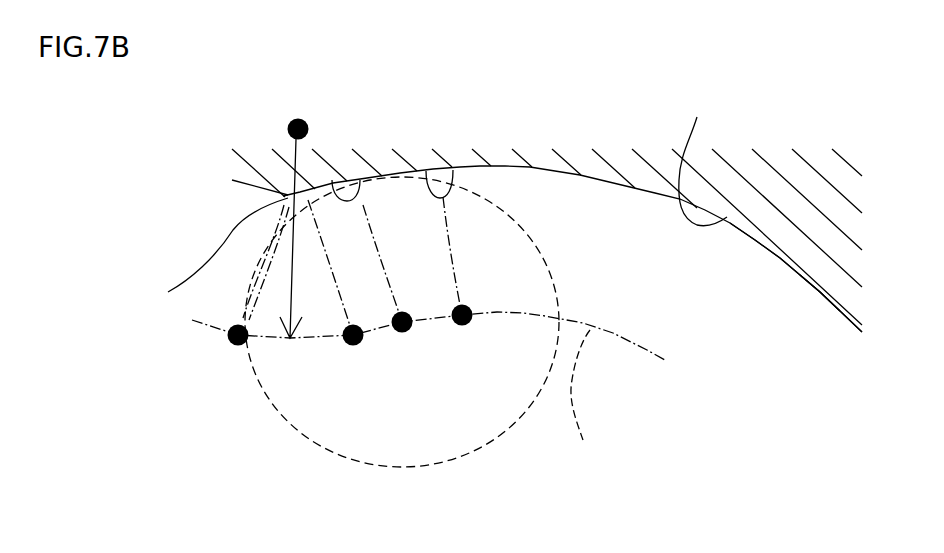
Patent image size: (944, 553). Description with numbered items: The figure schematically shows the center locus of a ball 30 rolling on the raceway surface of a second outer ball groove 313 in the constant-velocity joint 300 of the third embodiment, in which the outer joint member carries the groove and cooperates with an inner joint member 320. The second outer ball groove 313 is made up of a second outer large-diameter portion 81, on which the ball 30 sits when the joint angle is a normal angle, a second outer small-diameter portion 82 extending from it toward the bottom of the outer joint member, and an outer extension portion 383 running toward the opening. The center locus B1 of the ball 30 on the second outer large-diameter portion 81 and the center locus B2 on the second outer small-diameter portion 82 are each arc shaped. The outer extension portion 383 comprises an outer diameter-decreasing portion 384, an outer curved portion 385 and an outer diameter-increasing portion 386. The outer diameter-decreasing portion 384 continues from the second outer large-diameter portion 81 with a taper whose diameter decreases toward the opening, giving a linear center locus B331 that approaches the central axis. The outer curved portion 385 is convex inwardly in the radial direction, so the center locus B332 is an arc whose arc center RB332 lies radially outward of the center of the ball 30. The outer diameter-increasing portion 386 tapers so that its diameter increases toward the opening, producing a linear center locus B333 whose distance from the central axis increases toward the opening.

The constant-velocity joint 300 is at (758, 116).
The second outer ball groove 313 is at (686, 302).
The inner joint member 320 is at (820, 293).
The ball 30 is at (535, 237).
The second outer large-diameter portion 81 is at (451, 184).
The second outer small-diameter portion 82 is at (703, 159).
The outer diameter-decreasing portion 384 is at (358, 182).
The outer curved portion 385 is at (204, 251).
The outer diameter-increasing portion 386 is at (285, 195).
The outer extension portion 383 is at (195, 218).
The arc center RB332 is at (296, 119).
The center locus B333 is at (353, 328).
The center locus B332 is at (287, 342).
The center locus B331 is at (353, 335).
The center locus B1 is at (402, 322).
The center locus B2 is at (583, 440).